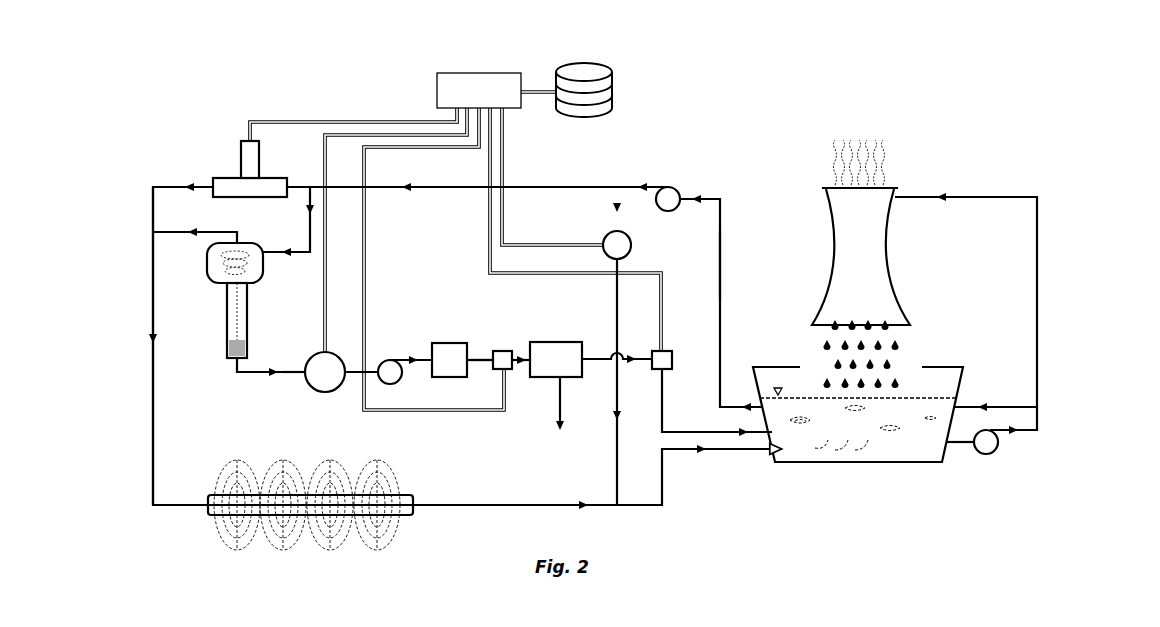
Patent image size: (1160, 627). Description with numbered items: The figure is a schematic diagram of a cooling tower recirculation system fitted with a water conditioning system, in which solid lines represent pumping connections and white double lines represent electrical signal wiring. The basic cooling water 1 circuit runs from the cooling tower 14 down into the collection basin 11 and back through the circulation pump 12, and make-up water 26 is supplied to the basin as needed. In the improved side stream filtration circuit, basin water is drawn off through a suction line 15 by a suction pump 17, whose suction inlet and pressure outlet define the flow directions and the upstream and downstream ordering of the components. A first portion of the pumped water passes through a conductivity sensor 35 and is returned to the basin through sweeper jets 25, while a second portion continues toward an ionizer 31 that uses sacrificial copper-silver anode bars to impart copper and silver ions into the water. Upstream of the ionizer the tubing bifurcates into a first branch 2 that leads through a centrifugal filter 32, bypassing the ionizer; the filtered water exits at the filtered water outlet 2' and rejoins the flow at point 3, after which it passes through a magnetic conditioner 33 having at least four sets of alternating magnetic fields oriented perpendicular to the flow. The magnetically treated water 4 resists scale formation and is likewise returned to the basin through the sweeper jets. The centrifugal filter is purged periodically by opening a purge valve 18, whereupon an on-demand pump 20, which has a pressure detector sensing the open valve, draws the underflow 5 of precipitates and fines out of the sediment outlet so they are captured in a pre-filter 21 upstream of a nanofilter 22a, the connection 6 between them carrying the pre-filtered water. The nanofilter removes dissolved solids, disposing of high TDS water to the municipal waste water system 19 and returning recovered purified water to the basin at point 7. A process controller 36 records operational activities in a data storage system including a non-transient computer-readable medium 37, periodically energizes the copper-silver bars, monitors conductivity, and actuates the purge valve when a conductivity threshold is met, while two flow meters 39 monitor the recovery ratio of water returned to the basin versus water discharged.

The cooling water circuit 1 is at (990, 205).
The first branch 2 is at (287, 221).
The filtered water outlet 2' is at (195, 256).
The rejoining point 3 is at (145, 253).
The magnetically treated water 4 is at (500, 513).
The underflow line from hydrocyclone 5 is at (292, 364).
The line from filter to treatment unit 6 is at (484, 352).
The filtered water return to basin 7 is at (727, 442).
The collection basin 11 is at (760, 366).
The circulation pump 12 is at (986, 455).
The cooling tower 14 is at (826, 226).
The suction line 15 is at (714, 262).
The suction pump 17 is at (661, 189).
The purge valve 18 is at (318, 352).
The municipal waste water system 19 is at (568, 405).
The on-demand pump 20 is at (394, 360).
The pre-filter 21 is at (445, 343).
The nanofilter 22a is at (555, 342).
The sweeper jets 25 is at (781, 462).
The make-up water 26 is at (996, 399).
The ionizer 31 is at (240, 160).
The centrifugal filter 32 is at (226, 320).
The magnetic conditioner 33 is at (400, 495).
The conductivity sensor 35 is at (605, 237).
The process controller 36 is at (437, 86).
The non-transient computer-readable medium 37 is at (614, 94).
The flow meters 39 is at (512, 372).